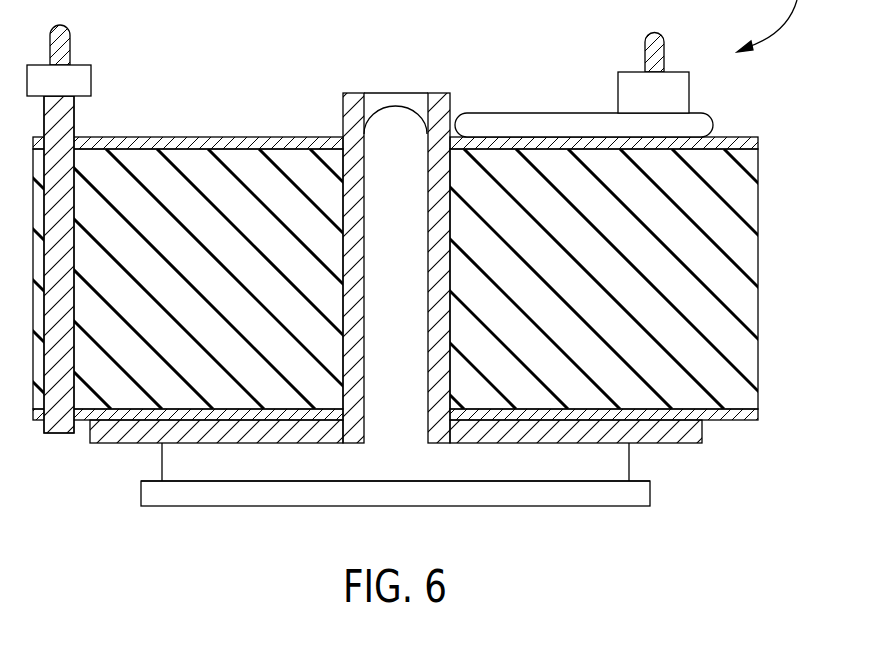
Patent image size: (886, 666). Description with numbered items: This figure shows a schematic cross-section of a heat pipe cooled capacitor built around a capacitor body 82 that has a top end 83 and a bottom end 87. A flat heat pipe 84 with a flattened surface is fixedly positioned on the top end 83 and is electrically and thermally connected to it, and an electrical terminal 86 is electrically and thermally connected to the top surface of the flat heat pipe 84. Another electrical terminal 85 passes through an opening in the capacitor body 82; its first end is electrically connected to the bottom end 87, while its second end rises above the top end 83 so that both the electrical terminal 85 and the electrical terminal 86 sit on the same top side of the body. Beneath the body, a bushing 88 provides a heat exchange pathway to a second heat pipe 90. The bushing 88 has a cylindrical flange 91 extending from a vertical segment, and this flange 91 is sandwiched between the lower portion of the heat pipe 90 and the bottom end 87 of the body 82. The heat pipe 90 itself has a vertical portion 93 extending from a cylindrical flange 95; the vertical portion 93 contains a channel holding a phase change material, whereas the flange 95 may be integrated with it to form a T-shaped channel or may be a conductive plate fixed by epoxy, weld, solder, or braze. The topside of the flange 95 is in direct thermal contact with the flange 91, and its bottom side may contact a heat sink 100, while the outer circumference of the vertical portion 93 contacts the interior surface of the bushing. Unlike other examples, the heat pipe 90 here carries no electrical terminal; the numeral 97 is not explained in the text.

The capacitor body 82 is at (758, 356).
The top end 83 is at (243, 137).
The flat heat pipe 84 is at (713, 125).
The electrical terminal 85 is at (70, 45).
The electrical terminal 86 is at (665, 55).
The bottom end 87 is at (84, 425).
The bushing 88 is at (678, 447).
The second heat pipe 90 is at (546, 470).
The cylindrical flange 91 is at (140, 445).
The vertical portion 93 is at (391, 288).
The cylindrical flange 95 is at (298, 460).
The top surface of base 97 is at (587, 485).
The heat sink 100 is at (643, 495).